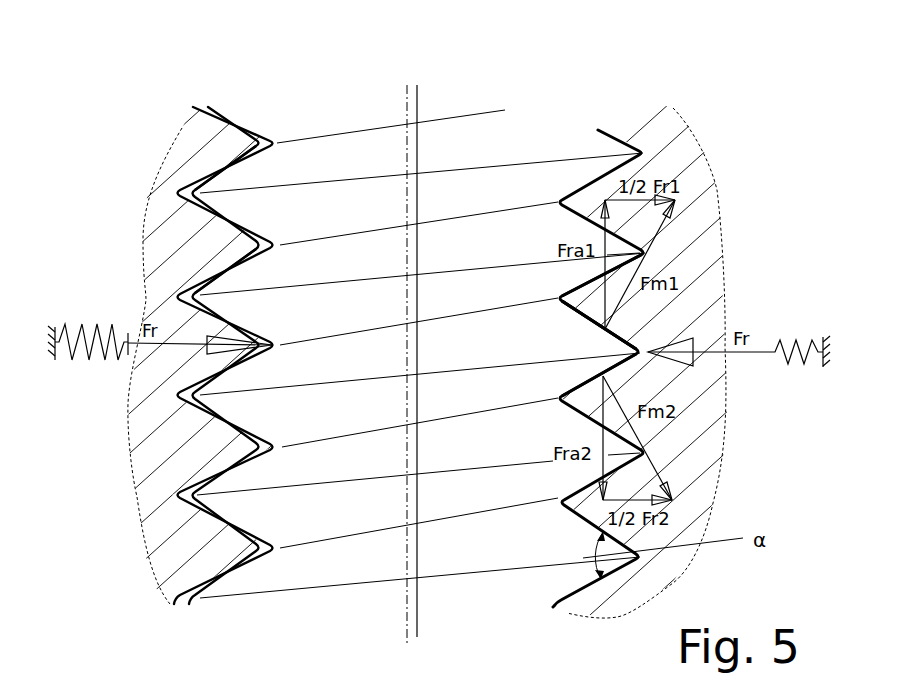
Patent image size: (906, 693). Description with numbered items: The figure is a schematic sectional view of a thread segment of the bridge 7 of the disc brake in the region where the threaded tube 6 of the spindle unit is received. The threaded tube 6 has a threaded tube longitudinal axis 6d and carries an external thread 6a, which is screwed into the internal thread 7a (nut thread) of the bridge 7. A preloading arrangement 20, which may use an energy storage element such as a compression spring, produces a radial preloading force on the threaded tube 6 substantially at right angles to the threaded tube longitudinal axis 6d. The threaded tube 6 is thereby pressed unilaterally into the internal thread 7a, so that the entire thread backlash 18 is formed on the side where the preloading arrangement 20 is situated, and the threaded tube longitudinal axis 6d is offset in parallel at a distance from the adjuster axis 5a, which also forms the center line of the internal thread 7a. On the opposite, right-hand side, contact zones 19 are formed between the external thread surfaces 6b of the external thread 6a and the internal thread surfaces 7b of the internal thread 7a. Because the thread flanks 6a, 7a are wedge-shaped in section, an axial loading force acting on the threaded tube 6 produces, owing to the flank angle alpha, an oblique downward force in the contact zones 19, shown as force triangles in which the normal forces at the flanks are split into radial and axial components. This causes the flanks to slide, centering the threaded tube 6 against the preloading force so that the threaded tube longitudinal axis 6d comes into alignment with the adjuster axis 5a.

The adjuster axis 5a is at (407, 612).
The threaded tube 6 is at (375, 148).
The external thread 6a is at (210, 180).
The external thread surfaces 6b is at (593, 347).
The threaded tube longitudinal axis 6d is at (417, 593).
The bridge 7 is at (706, 432).
The internal thread 7a is at (227, 262).
The internal thread surfaces 7b is at (593, 328).
The thread backlash 18 is at (195, 520).
The contact zones 19 is at (613, 383).
The preloading arrangement 20 is at (100, 362).